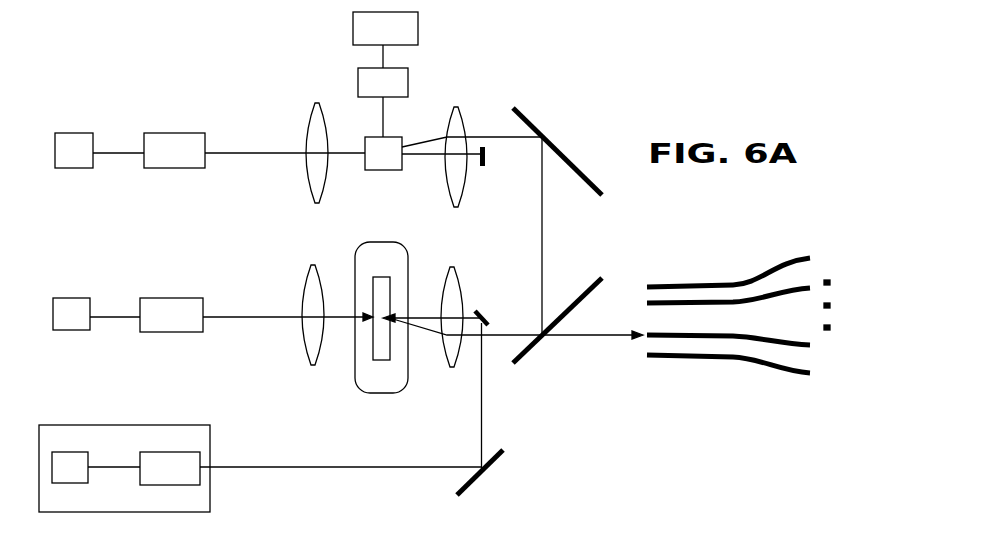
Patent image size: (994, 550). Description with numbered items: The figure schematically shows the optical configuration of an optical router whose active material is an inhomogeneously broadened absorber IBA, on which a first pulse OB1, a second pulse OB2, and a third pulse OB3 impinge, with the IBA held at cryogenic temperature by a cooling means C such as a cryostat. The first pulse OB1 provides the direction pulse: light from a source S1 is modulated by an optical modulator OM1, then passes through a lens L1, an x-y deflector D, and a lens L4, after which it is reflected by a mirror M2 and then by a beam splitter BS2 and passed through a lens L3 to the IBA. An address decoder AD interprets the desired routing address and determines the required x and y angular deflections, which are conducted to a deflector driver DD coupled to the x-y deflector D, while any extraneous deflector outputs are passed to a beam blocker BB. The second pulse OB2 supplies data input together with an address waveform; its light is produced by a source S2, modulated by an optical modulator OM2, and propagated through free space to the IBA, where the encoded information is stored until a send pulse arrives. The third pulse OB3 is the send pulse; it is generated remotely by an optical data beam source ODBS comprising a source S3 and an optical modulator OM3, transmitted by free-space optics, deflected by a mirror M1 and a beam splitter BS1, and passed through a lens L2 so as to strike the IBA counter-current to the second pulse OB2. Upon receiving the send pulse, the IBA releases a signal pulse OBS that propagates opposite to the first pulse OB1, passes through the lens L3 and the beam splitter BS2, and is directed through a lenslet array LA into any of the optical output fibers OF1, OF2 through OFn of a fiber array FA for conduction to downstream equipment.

The source S1 is at (74, 151).
The optical modulator OM1 is at (174, 151).
The first pulse OB1 is at (285, 142).
The lens L1 is at (304, 141).
The address decoder AD is at (385, 28).
The deflector driver DD is at (383, 83).
The x-y deflector D is at (383, 153).
The lens L4 is at (457, 141).
The beam blocker BB is at (506, 156).
The mirror M2 is at (557, 146).
The source S2 is at (71, 315).
The optical modulator OM2 is at (171, 315).
The second pulse OB2 is at (288, 306).
The lens L2 is at (308, 334).
The cooling means C is at (381, 317).
The inhomogeneously broadened absorber IBA is at (382, 333).
The lens L3 is at (457, 335).
The beam splitter BS1 is at (504, 318).
The beam splitter BS2 is at (557, 306).
The signal pulse OBS is at (580, 351).
The lenslet array LA is at (623, 329).
The fiber array FA is at (708, 378).
The optical output fiber OFn is at (755, 264).
The optical output fiber OF2 is at (755, 348).
The optical output fiber OF1 is at (755, 373).
The optical data beam source ODBS is at (124, 468).
The source S3 is at (70, 470).
The optical modulator OM3 is at (170, 470).
The third pulse OB3 is at (341, 456).
The mirror M1 is at (482, 483).